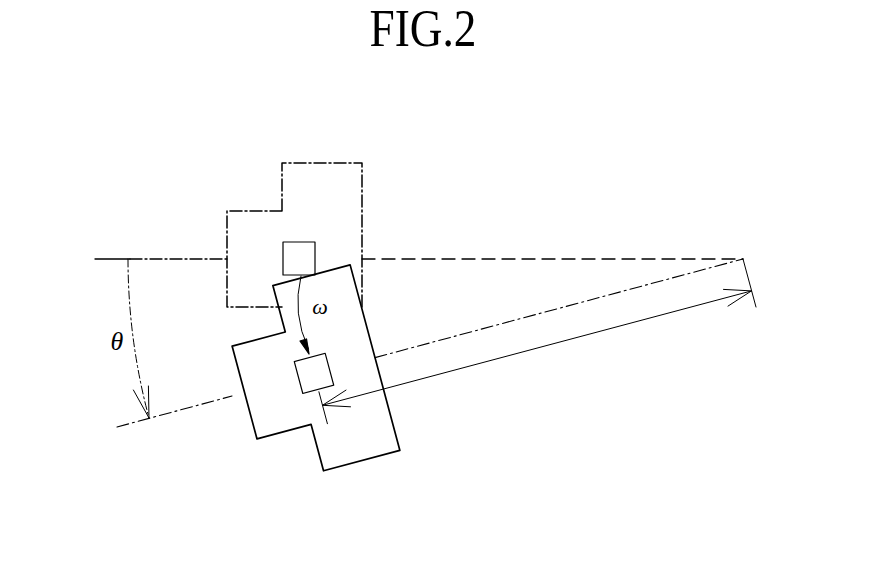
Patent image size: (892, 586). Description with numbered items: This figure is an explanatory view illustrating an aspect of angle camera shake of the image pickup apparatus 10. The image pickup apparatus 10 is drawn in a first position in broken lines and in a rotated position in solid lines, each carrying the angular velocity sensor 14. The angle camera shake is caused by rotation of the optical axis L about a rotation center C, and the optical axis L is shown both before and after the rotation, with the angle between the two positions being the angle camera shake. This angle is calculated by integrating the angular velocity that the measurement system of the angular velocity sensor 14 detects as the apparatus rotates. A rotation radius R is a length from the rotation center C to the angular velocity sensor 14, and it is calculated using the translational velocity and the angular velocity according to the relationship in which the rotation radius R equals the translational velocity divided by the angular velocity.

The image pickup apparatus 10 is at (329, 163).
The angular velocity sensor 14 is at (308, 317).
The optical axis L is at (107, 258).
The rotation center C is at (744, 265).
The rotation radius R is at (535, 356).